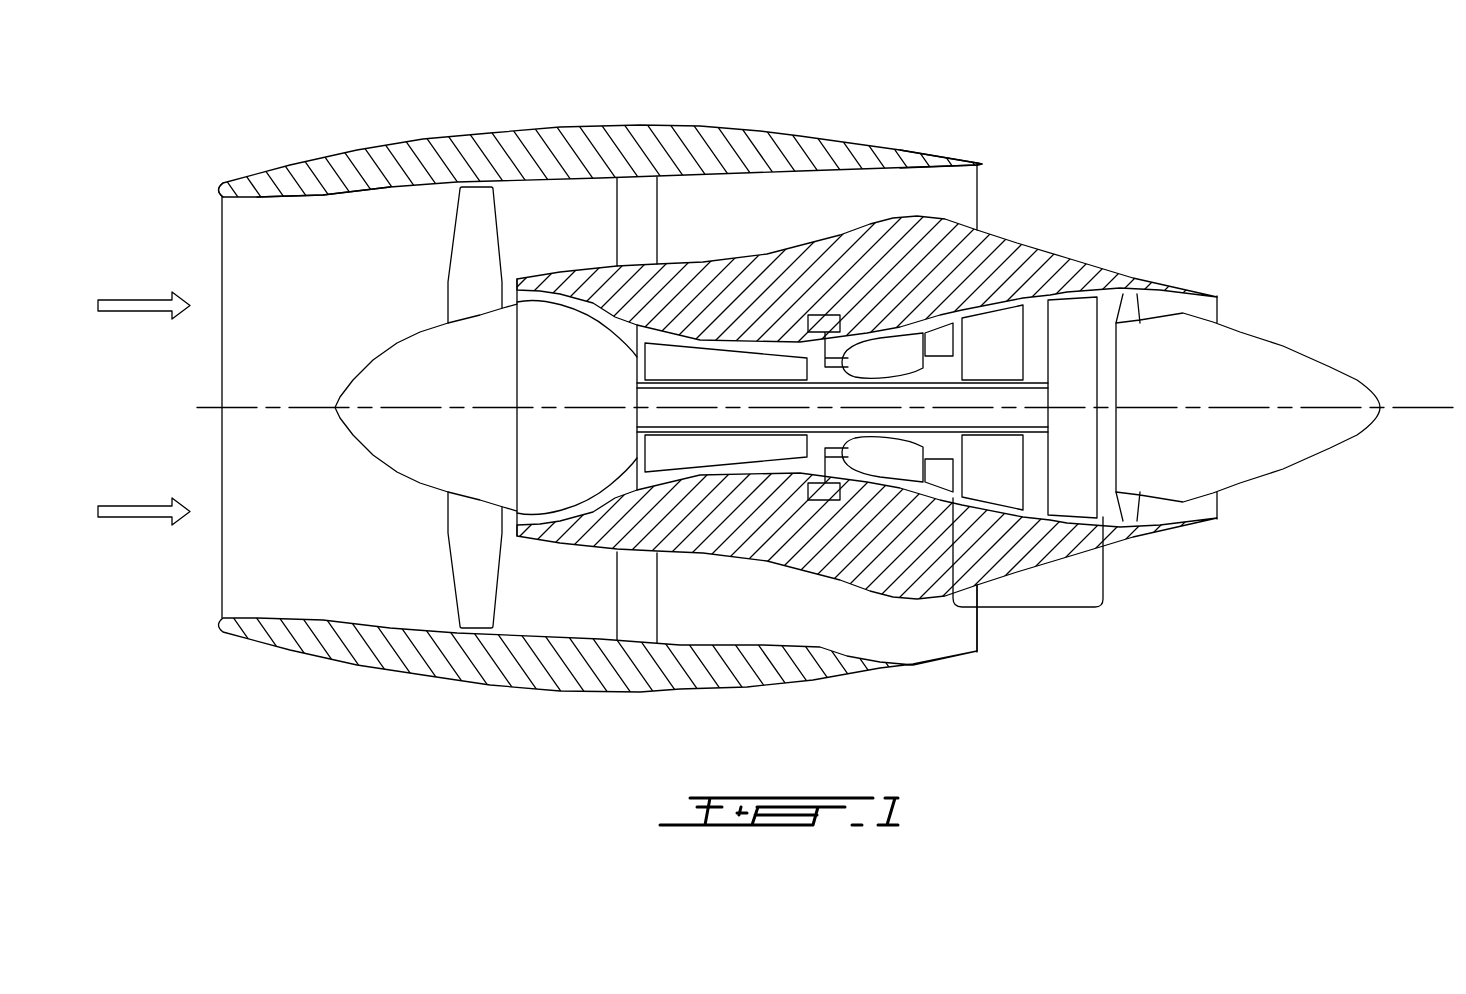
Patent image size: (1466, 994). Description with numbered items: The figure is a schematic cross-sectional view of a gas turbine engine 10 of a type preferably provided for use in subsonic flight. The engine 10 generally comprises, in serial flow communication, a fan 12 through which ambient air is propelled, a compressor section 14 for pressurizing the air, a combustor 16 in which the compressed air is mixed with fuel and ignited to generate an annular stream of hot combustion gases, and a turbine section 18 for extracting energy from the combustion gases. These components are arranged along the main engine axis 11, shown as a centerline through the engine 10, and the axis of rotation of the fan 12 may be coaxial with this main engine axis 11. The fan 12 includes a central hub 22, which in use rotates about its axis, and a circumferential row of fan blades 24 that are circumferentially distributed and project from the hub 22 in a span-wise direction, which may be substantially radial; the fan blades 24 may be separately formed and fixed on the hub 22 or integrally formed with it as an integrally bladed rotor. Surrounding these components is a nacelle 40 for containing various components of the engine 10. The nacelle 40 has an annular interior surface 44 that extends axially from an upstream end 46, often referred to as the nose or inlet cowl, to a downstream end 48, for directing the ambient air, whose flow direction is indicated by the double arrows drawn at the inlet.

The gas turbine engine 10 is at (1137, 190).
The main engine axis 11 is at (1443, 406).
The fan 12 is at (437, 552).
The compressor section 14 is at (703, 358).
The combustor 16 is at (870, 357).
The turbine section 18 is at (1028, 609).
The central hub 22 is at (407, 367).
The fan blades 24 is at (475, 243).
The nacelle 40 is at (385, 162).
The annular interior surface 44 is at (292, 199).
The upstream end 46 is at (220, 187).
The downstream end 48 is at (983, 163).